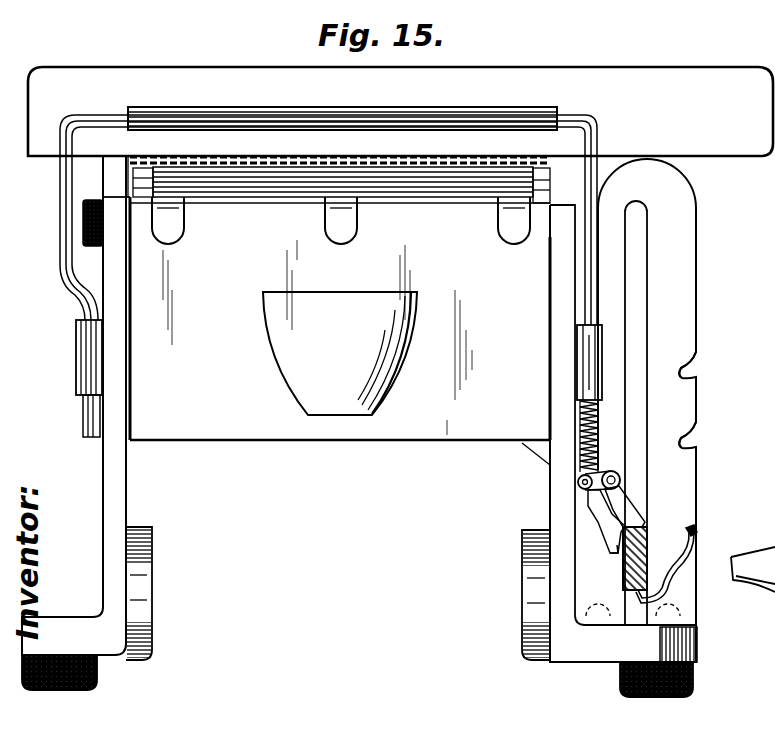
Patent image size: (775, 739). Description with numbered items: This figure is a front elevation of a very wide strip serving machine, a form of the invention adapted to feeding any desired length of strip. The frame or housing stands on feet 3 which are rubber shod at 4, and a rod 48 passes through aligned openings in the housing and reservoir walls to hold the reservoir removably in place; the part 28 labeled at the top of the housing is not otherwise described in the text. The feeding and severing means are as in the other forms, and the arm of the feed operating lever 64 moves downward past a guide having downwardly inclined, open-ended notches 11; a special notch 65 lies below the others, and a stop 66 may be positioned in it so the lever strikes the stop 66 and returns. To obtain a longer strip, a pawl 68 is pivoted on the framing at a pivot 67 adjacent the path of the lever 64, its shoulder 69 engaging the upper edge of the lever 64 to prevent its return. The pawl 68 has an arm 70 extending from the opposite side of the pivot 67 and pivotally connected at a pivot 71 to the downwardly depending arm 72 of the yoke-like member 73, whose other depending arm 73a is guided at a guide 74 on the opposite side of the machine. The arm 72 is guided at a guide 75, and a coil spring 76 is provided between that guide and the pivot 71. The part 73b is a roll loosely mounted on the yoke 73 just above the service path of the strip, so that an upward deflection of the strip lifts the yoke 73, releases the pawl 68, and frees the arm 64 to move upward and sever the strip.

The feet 3 is at (699, 645).
The rubber shoes 4 is at (92, 686).
The notches 11 is at (690, 364).
The carriage body 28 is at (272, 192).
The rod 48 is at (84, 232).
The arm of the feed operating lever 64 is at (648, 522).
The special notch 65 is at (694, 530).
The stop 66 is at (688, 557).
The pivot 67 is at (620, 476).
The pawl 68 is at (622, 497).
The shoulder 69 is at (614, 530).
The arm 70 is at (597, 498).
The pivot 71 is at (578, 481).
The depending arm 72 is at (597, 187).
The yoke-like member 73 is at (566, 118).
The depending arm 73a is at (68, 207).
The roll 73b is at (328, 105).
The guide 74 is at (84, 356).
The guide 75 is at (580, 362).
The coil spring 76 is at (576, 420).